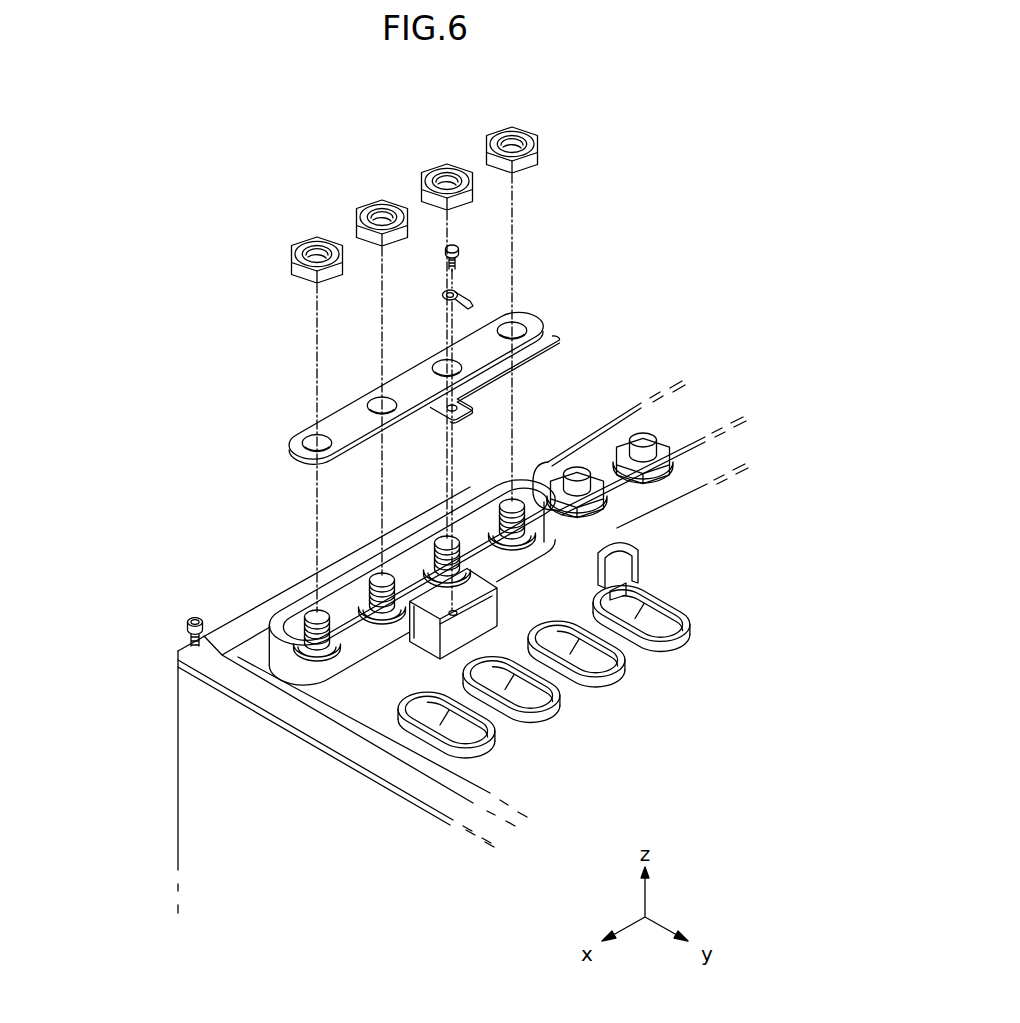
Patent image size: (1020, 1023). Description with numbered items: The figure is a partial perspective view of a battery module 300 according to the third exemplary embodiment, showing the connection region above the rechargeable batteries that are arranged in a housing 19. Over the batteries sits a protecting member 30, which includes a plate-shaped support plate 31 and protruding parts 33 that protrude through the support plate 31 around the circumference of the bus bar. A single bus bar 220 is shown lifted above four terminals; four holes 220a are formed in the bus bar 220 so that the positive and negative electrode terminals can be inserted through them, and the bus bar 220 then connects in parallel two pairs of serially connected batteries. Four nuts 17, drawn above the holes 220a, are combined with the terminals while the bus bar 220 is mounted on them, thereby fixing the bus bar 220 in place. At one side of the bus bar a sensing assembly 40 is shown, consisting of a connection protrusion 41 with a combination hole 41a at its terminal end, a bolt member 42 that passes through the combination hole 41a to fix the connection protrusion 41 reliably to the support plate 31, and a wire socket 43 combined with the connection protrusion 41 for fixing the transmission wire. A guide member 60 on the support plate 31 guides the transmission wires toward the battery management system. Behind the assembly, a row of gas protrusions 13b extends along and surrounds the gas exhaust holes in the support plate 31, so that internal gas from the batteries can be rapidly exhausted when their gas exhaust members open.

The battery module 300 is at (635, 221).
The nuts 17 is at (303, 243).
The bus bar 220 is at (338, 412).
The holes 220a is at (443, 369).
The voltage sensing assembly 40 is at (599, 282).
The connection protrusion 41 is at (513, 371).
The combination hole 41a is at (463, 408).
The bolt member 42 is at (458, 249).
The wire socket 43 is at (476, 294).
The guide member 60 is at (650, 560).
The gas protrusions 13b is at (490, 716).
The protecting member 30 is at (114, 703).
The support plate 31 is at (255, 712).
The protruding parts 33 is at (228, 667).
The housing 19 is at (177, 813).